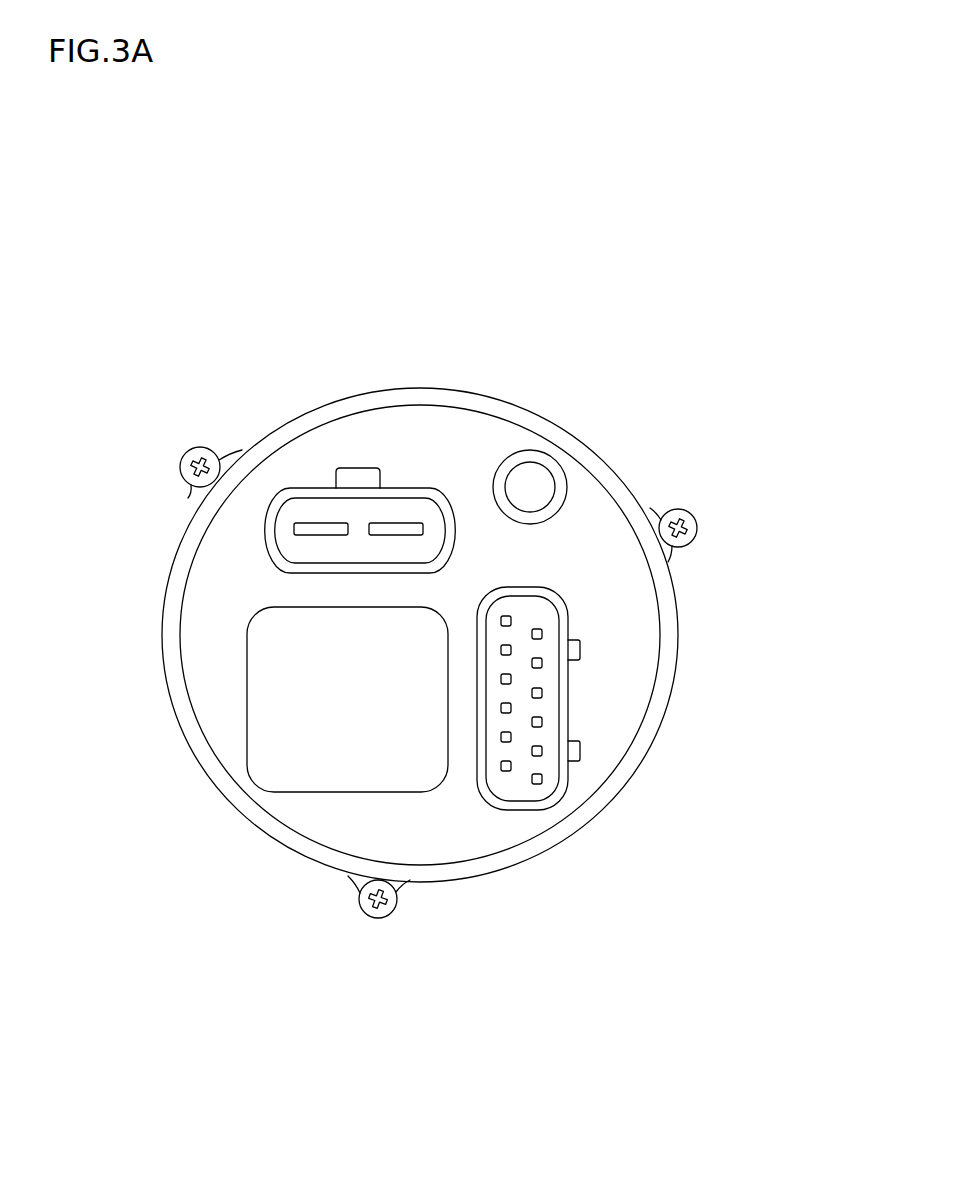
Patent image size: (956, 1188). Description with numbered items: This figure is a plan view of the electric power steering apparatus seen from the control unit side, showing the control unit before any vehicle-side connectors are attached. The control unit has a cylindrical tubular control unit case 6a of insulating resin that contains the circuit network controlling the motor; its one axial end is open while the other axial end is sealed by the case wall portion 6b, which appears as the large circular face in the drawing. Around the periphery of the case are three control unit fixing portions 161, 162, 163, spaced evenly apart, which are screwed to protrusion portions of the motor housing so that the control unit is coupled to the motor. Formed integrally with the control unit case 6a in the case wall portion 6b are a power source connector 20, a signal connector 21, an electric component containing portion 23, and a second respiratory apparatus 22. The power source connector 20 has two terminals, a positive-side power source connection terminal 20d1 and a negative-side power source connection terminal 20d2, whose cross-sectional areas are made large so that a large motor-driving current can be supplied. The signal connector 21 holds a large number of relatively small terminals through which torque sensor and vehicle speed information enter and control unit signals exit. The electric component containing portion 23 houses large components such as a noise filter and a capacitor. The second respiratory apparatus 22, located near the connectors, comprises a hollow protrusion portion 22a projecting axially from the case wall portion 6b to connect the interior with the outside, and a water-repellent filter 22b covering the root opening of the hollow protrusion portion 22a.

The control unit case 6a is at (268, 440).
The case wall portion 6b is at (207, 657).
The power source connector 20 is at (428, 421).
The positive-side power source connection terminal 20d1 is at (293, 536).
The negative-side power source connection terminal 20d2 is at (418, 535).
The signal connector 21 is at (550, 797).
The second respiratory apparatus 22 is at (577, 387).
The hollow protrusion portion 22a is at (558, 472).
The filter 22b is at (529, 416).
The electric component containing portion 23 is at (303, 763).
The control unit fixing portion 161 is at (655, 510).
The control unit fixing portion 162 is at (404, 884).
The control unit fixing portion 163 is at (196, 496).